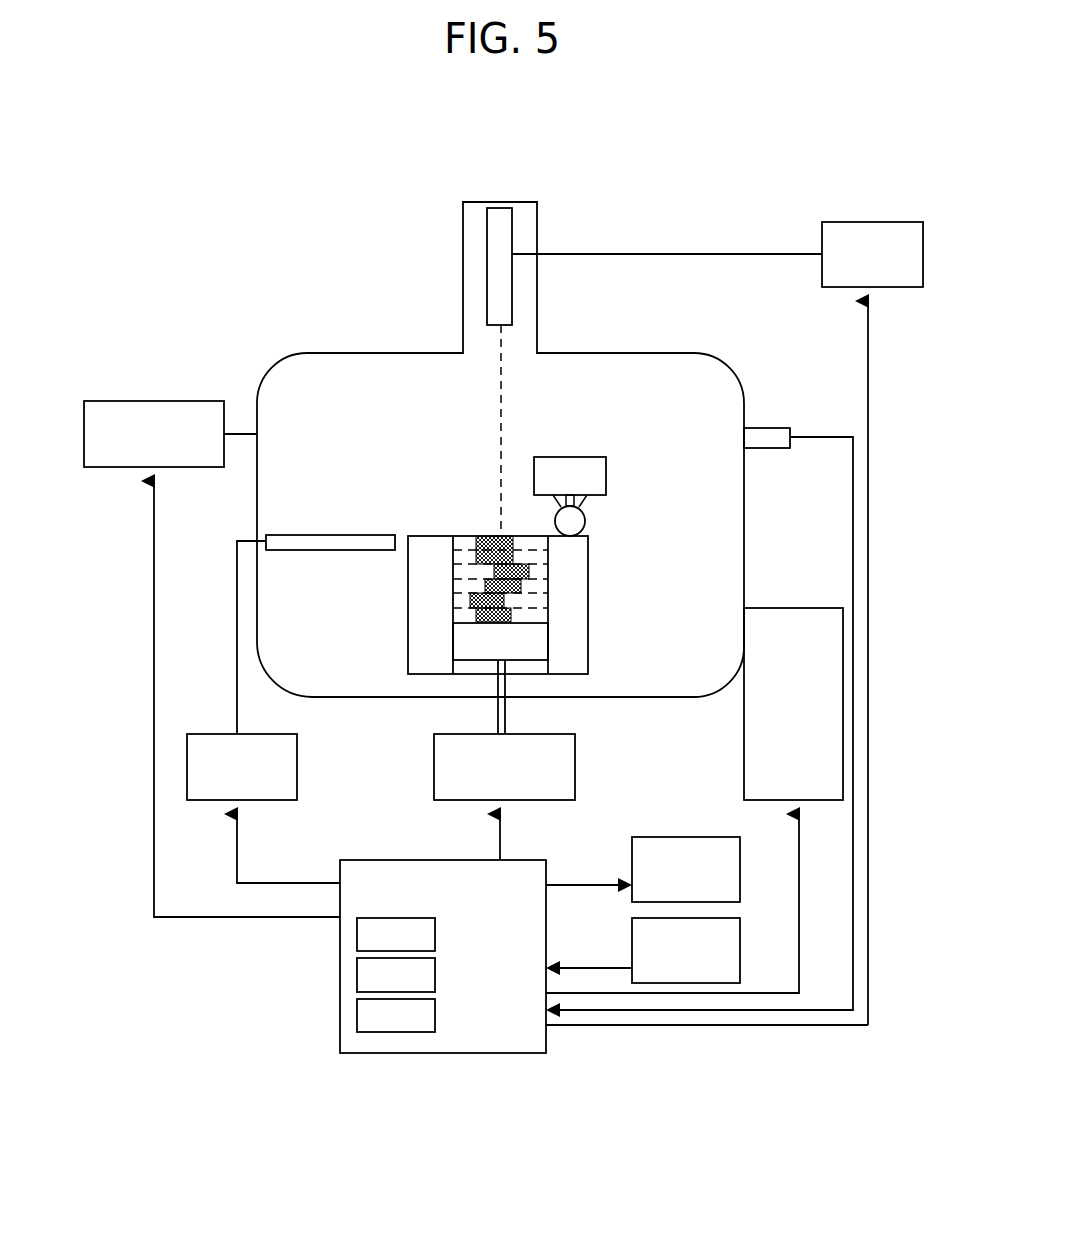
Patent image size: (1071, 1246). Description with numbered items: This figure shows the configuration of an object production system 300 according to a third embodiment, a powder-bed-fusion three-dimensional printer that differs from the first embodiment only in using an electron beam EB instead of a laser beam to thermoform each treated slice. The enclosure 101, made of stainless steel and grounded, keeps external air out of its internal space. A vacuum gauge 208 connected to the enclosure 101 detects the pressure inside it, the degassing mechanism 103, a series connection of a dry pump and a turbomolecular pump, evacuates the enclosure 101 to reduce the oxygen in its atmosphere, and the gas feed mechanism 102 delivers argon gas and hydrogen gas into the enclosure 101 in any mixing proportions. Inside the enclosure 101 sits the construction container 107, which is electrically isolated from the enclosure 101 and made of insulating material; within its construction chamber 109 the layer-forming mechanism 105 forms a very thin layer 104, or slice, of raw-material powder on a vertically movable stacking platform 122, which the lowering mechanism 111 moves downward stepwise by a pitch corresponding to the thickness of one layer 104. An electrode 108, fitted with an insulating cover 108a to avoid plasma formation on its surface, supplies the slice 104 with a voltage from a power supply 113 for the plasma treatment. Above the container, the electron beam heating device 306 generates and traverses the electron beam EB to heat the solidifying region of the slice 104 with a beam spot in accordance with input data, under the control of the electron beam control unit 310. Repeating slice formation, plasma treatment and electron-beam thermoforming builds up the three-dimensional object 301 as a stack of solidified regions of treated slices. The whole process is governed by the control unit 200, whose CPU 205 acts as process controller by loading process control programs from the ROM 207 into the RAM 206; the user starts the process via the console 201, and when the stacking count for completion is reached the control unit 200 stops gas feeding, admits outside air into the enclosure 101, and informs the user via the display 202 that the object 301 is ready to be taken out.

The object production system 300 is at (733, 197).
The electron beam control unit 310 is at (868, 222).
The electron beam heating device 306 is at (512, 227).
The electron beam EB is at (503, 392).
The enclosure 101 is at (310, 353).
The gas feed mechanism 102 is at (183, 401).
The vacuum gauge 208 is at (768, 428).
The degassing mechanism 103 is at (790, 608).
The layer-forming mechanism 105 is at (606, 478).
The insulating cover 108a is at (325, 535).
The electrode 108 is at (432, 543).
The construction container 107 is at (588, 628).
The layer 104 is at (540, 543).
The construction chamber 109 is at (537, 580).
The three-dimensional object 301 is at (485, 536).
The shaping table 122 is at (540, 640).
The lowering mechanism 111 is at (575, 767).
The power supply 113 is at (297, 767).
The control unit 200 is at (400, 956).
The CPU 205 is at (435, 935).
The RAM 206 is at (435, 975).
The ROM 207 is at (435, 1015).
The display 202 is at (740, 870).
The console 201 is at (740, 952).